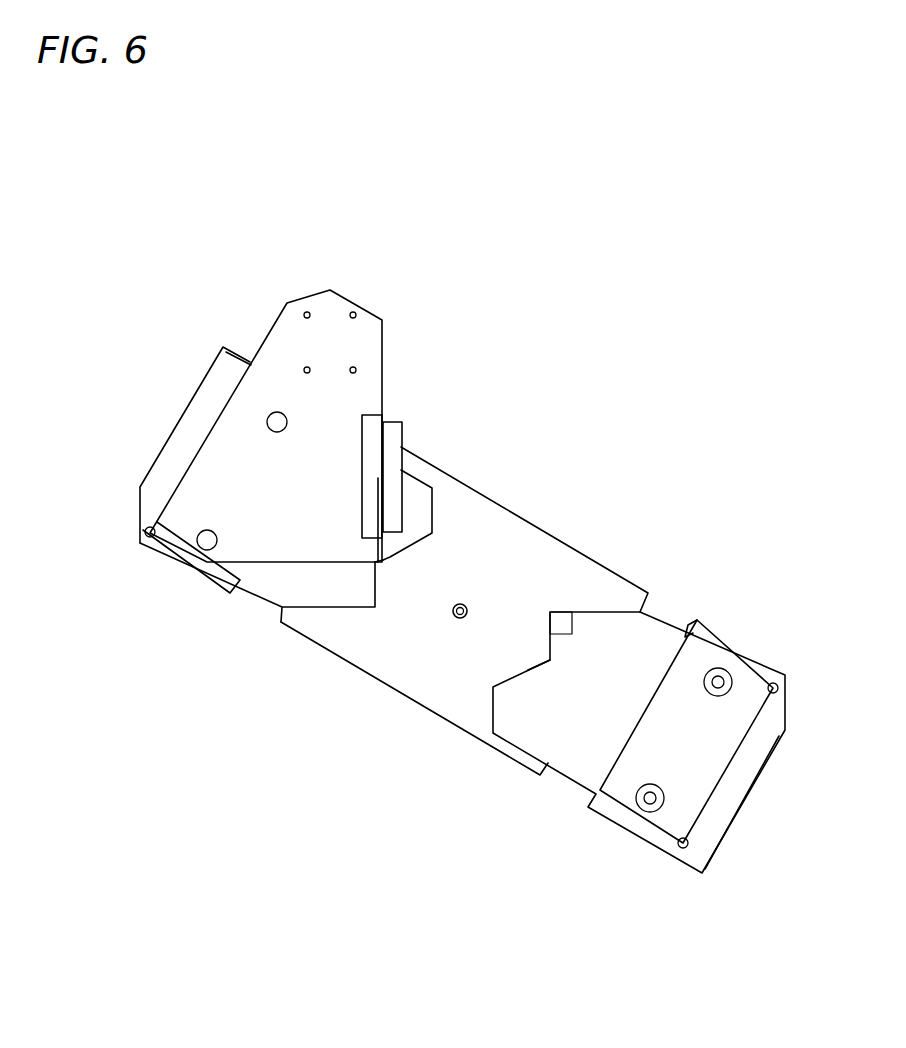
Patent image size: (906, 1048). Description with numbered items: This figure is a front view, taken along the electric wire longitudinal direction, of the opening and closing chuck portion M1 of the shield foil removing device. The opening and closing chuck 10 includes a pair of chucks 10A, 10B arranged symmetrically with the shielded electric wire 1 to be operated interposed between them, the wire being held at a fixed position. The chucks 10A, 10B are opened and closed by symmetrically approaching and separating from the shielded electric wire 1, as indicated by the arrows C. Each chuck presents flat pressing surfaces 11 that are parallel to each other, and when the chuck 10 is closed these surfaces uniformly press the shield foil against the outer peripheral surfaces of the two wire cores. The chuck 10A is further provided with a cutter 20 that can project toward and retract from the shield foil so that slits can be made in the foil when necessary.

The mount module M1 is at (410, 284).
The opening and closing chuck 10 is at (533, 623).
The chuck 10A is at (416, 476).
The chuck 10B is at (503, 707).
The flat pressing surface 11 is at (380, 560).
The cutter 20 is at (393, 560).
The shielded electric wire 1 is at (455, 617).
The arrows C is at (440, 597).